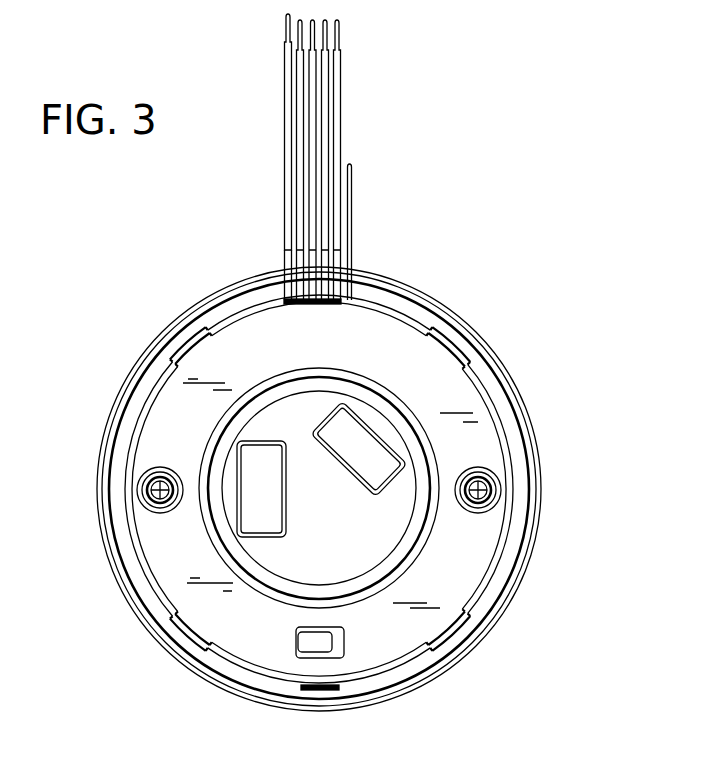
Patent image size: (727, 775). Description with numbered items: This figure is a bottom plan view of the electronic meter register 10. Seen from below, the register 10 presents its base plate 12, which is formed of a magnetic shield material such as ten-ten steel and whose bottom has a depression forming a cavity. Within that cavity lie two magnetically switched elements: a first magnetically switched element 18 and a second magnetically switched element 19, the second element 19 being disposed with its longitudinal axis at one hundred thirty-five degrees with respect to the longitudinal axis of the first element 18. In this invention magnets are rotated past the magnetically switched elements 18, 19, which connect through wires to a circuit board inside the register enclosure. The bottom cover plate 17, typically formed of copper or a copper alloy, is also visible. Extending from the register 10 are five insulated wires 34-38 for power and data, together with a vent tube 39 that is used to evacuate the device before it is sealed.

The electronic meter register 10 is at (508, 303).
The base plate 12 is at (480, 442).
The bottom cover plate 17 is at (358, 564).
The first magnetically switched element 18 is at (260, 537).
The second magnetically switched element 19 is at (343, 468).
The insulated wires 34-38 is at (284, 190).
The vent tube 39 is at (353, 217).